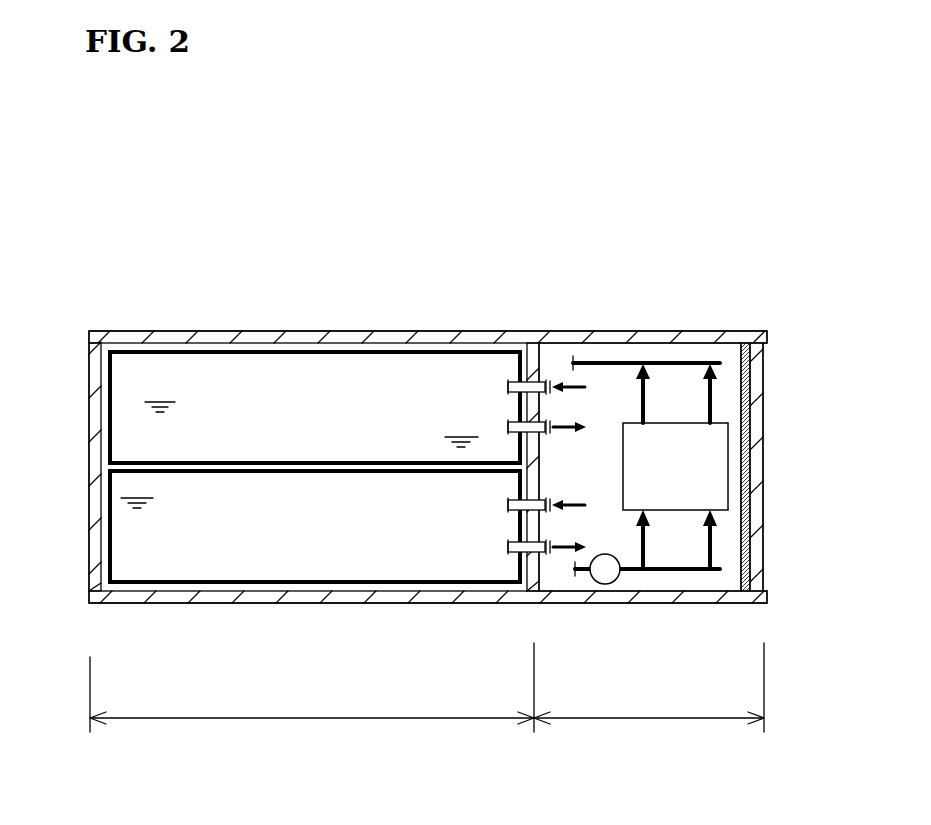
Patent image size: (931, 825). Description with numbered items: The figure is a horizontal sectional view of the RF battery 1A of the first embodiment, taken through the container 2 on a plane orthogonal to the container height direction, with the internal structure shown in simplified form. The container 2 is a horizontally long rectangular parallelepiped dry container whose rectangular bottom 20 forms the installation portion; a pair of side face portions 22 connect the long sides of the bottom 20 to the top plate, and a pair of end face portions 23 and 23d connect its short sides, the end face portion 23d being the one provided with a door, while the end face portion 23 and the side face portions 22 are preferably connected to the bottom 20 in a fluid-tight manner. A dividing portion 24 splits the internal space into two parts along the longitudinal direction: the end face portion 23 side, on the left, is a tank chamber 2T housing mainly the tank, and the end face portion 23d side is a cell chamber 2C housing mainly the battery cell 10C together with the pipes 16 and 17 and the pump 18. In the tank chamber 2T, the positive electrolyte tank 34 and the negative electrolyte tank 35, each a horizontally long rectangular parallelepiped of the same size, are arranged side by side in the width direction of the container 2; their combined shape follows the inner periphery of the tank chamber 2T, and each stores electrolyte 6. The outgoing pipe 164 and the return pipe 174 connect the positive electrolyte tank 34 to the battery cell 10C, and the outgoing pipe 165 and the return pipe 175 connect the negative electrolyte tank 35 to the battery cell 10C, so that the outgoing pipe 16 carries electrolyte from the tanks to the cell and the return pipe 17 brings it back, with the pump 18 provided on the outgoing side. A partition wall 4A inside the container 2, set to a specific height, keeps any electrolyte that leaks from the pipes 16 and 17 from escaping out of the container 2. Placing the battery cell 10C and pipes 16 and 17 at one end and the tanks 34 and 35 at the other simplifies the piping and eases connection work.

The RF battery 1A is at (135, 257).
The container 2 is at (732, 322).
The tank chamber 2T is at (312, 707).
The cell chamber 2C is at (649, 700).
The side face portion 22 is at (342, 337).
The end face portion 23 is at (95, 547).
The end face portion 23d is at (765, 346).
The dividing portion 24 is at (540, 568).
The partition wall 4A is at (746, 505).
The bottom 20 is at (728, 548).
The positive electrolyte tank 34 is at (270, 557).
The negative electrolyte tank 35 is at (258, 378).
The electrolyte 6 is at (130, 407).
The outgoing pipe 165 is at (508, 427).
The return pipe 175 is at (519, 381).
The outgoing pipe 164 is at (510, 553).
The return pipe 174 is at (508, 504).
The battery cell 10C is at (710, 458).
The return pipe 17 is at (693, 362).
The outgoing pipe 16 is at (662, 570).
The pump 18 is at (605, 585).